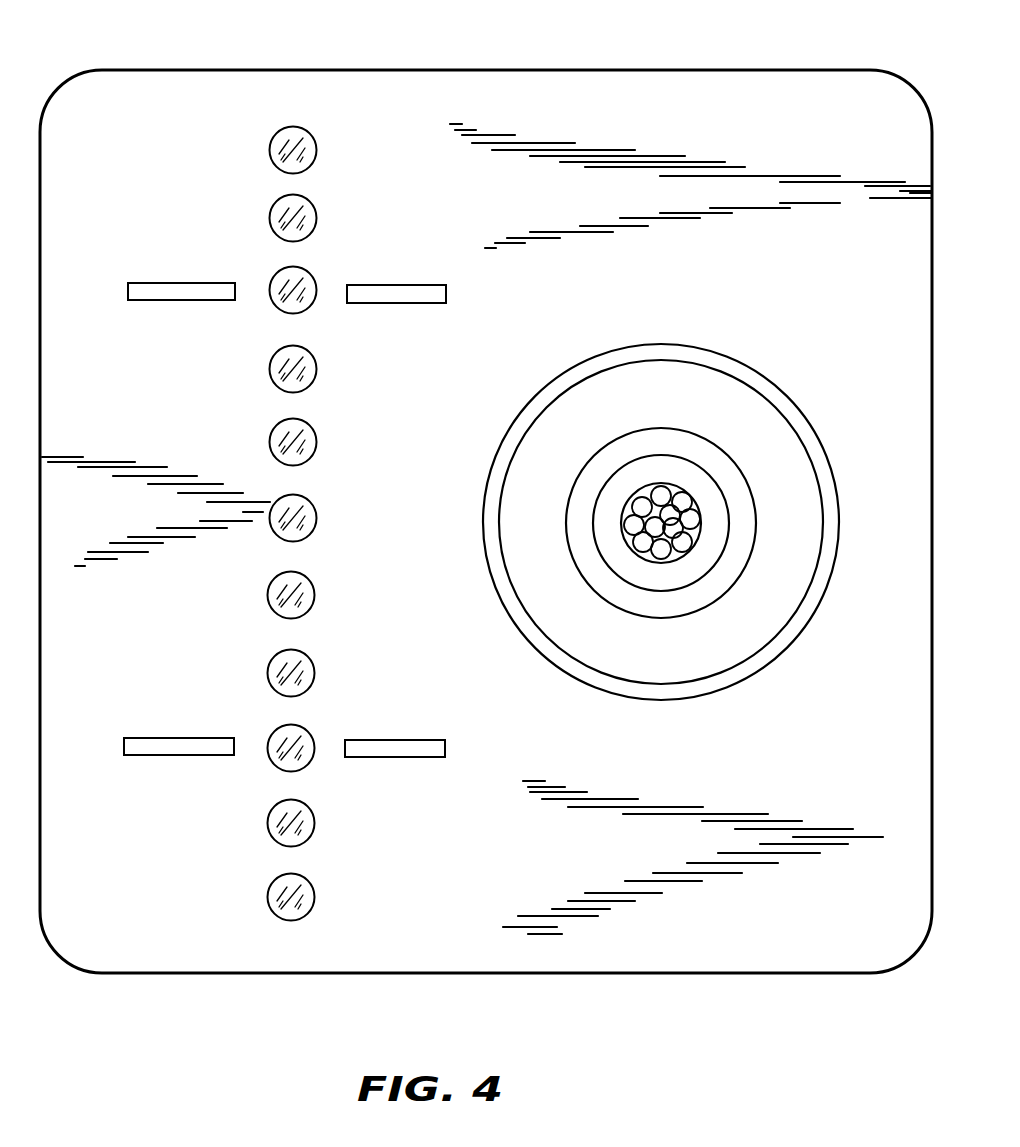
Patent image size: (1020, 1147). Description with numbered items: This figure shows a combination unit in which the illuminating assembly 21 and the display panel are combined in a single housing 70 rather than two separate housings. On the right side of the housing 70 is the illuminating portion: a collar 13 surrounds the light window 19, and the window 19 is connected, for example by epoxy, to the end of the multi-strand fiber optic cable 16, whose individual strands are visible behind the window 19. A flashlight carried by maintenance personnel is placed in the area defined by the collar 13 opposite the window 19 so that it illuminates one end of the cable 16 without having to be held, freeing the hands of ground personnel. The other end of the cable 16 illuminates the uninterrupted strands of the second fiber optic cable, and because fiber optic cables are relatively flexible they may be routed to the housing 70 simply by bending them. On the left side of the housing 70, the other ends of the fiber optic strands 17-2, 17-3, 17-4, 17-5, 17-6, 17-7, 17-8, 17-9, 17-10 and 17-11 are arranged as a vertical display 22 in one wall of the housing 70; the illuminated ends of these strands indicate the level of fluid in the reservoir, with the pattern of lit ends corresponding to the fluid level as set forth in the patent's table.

The housing 70 is at (738, 70).
The array of indicator lights 22 is at (286, 104).
The fiber optic strand 17-11 is at (312, 152).
The fiber optic strand 17-10 is at (313, 222).
The fiber optic strand 17-9 is at (306, 302).
The fiber optic strand 17-8 is at (311, 378).
The fiber optic strand 17-7 is at (311, 447).
The fiber optic strand 17-6 is at (310, 522).
The fiber optic strand 17-5 is at (305, 595).
The fiber optic strand 17-4 is at (305, 680).
The fiber optic strand 17-3 is at (298, 760).
The fiber optic strand 17-2 is at (298, 830).
The illuminating assembly 21 is at (528, 402).
The collar 13 is at (508, 586).
The multi-strand fiber optic cable 16 is at (686, 546).
The window 19 is at (681, 500).